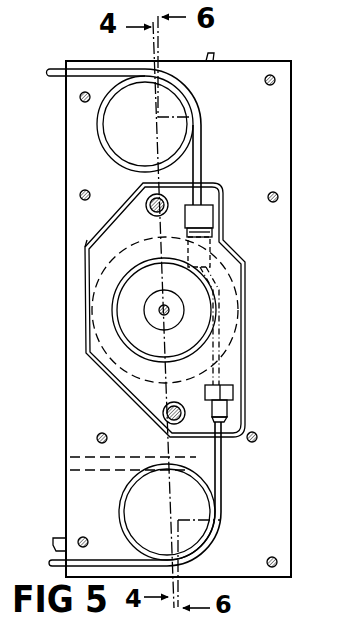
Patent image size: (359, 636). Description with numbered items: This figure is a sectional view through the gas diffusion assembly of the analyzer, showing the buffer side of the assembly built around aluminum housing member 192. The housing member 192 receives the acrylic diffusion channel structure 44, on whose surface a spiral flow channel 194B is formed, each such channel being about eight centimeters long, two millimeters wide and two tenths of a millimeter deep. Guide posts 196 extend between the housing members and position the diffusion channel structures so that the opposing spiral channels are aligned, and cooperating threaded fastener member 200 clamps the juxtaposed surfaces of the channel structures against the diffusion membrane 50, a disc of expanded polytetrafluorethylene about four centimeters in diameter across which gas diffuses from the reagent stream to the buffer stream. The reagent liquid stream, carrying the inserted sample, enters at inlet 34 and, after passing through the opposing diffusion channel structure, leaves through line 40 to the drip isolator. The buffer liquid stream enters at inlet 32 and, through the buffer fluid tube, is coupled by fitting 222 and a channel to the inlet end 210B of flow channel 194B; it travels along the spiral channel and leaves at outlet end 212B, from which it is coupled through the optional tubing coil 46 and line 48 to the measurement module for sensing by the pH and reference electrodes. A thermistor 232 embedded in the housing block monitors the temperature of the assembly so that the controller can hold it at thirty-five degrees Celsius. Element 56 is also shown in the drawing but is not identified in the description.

The inlet 32 is at (55, 569).
The inlet 34 is at (64, 540).
The line 40 is at (214, 55).
The diffusion channel structure 44 is at (88, 268).
The coil 46 is at (98, 137).
The line 48 is at (53, 71).
The diffusion membrane 50 is at (87, 239).
The take-up reel 56 is at (123, 502).
The housing member 192 is at (250, 68).
The flow channel 194B is at (215, 293).
The guide posts 196 is at (147, 201).
The threaded fastener member 200 is at (145, 312).
The inlet end 210B is at (214, 315).
The outlet end 212B is at (216, 327).
The fitting 222 is at (233, 394).
The thermistor 232 is at (200, 462).